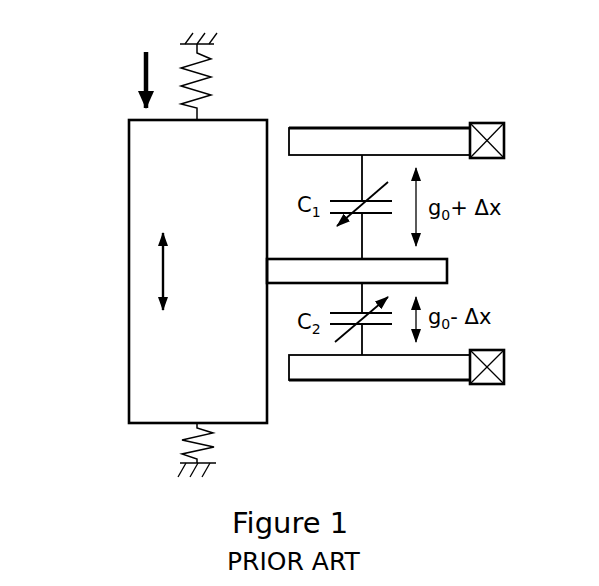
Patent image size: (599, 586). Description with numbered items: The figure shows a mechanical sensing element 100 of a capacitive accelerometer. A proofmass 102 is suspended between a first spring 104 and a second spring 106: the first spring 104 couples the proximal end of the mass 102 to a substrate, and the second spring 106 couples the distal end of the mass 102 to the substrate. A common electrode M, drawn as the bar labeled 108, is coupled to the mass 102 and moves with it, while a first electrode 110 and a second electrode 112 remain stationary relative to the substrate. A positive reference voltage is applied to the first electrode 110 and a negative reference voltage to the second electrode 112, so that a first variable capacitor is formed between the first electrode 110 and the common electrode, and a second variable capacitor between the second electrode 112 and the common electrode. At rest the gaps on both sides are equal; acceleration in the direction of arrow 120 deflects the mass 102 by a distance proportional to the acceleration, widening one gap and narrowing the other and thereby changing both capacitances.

The mechanical sensing element 100 is at (398, 72).
The proofmass 102 is at (129, 230).
The first spring 104 is at (221, 446).
The second spring 106 is at (213, 85).
The movable electrode (mass M) 108 is at (447, 259).
The first electrode 110 is at (422, 132).
The second electrode 112 is at (397, 375).
The arrow 120 is at (119, 80).